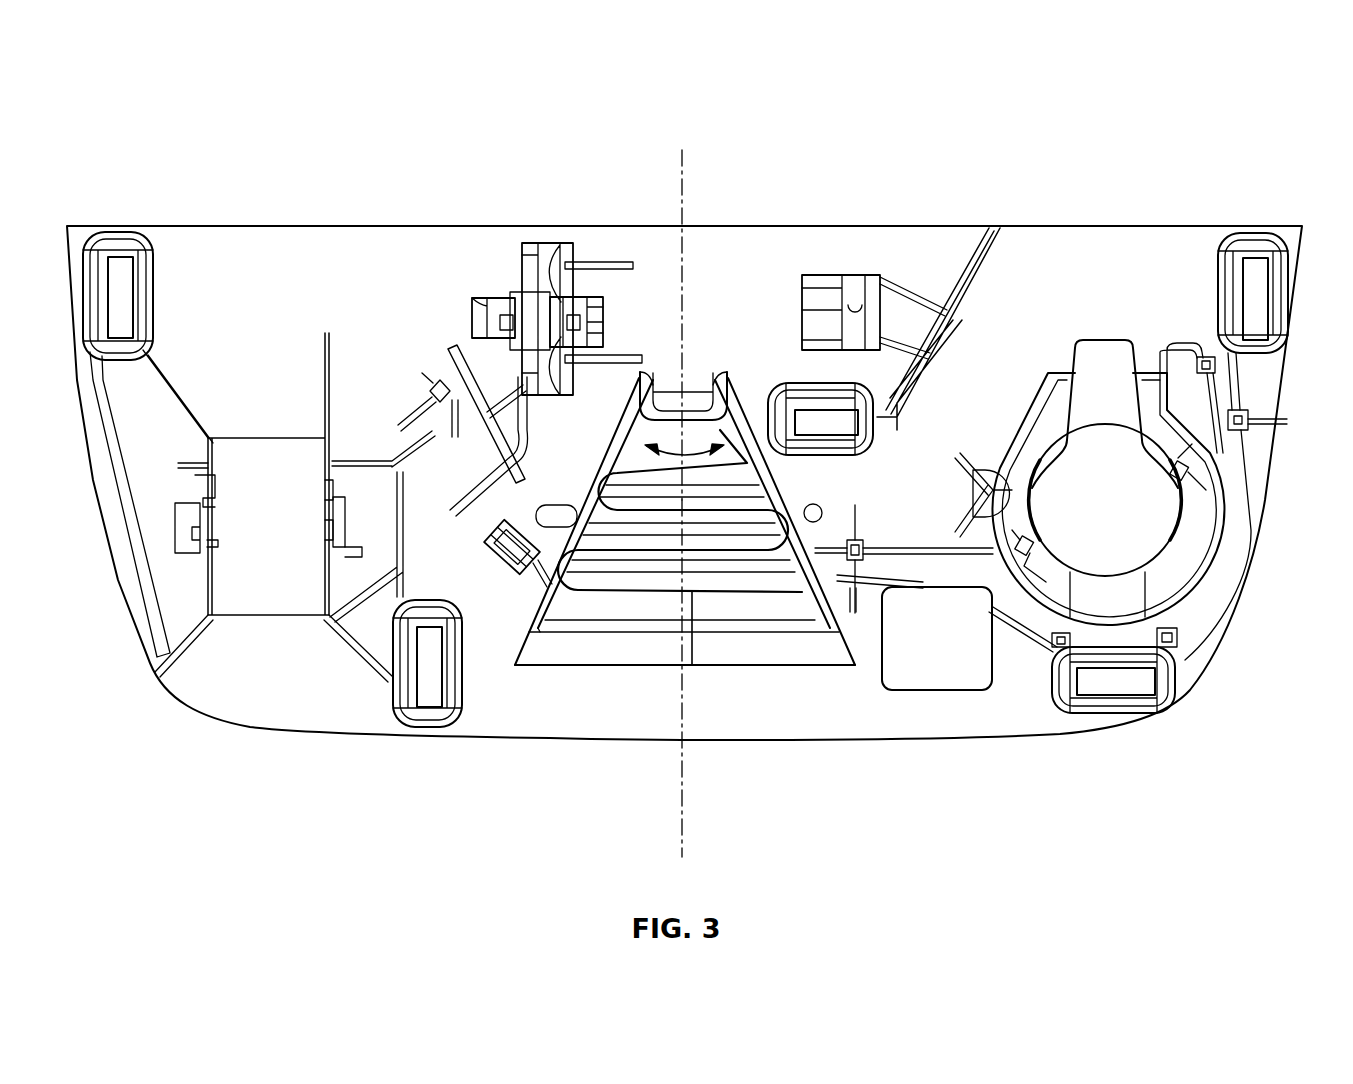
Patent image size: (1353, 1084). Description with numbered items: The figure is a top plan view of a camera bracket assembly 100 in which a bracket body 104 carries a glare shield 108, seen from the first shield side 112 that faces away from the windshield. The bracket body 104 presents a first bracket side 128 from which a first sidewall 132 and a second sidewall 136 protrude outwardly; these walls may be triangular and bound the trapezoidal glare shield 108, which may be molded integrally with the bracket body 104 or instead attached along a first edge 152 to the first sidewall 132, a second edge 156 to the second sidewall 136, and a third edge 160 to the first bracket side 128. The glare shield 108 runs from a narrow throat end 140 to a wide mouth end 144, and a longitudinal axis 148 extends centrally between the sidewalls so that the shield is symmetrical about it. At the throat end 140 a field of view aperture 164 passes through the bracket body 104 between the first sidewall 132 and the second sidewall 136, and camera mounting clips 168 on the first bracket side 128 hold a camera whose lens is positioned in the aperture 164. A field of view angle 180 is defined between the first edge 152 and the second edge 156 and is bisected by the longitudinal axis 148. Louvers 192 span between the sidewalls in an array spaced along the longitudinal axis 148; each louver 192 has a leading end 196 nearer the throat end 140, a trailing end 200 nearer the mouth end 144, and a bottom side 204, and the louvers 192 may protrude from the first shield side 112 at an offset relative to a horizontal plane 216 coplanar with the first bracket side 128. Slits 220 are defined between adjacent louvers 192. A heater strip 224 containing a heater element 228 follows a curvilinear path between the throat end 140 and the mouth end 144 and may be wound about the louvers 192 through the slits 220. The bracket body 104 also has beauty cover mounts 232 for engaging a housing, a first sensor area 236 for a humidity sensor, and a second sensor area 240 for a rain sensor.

The camera bracket assembly 100 is at (1188, 97).
The bracket body 104 is at (310, 240).
The glare shield 108 is at (817, 658).
The first shield side 112 is at (657, 600).
The first bracket side 128 is at (270, 365).
The first sidewall 132 is at (472, 298).
The second sidewall 136 is at (855, 350).
The throat end 140 is at (647, 445).
The mouth end 144 is at (790, 600).
The longitudinal axis 148 is at (682, 797).
The first edge 152 is at (575, 530).
The second edge 156 is at (745, 447).
The third edge 160 is at (770, 650).
The field of view aperture 164 is at (673, 386).
The camera mounting clips 168 is at (532, 320).
The field of view angle 180 is at (686, 445).
The louvers 192 is at (737, 488).
The leading end 196 is at (540, 615).
The trailing end 200 is at (562, 595).
The bottom side 204 is at (636, 576).
The horizontal plane 216 is at (683, 272).
The slits 220 is at (588, 600).
The heater strip 224 is at (697, 594).
The heater element 228 is at (605, 453).
The beauty cover mounts 232 is at (1175, 700).
The first sensor area 236 is at (268, 560).
The second sensor area 240 is at (1138, 498).